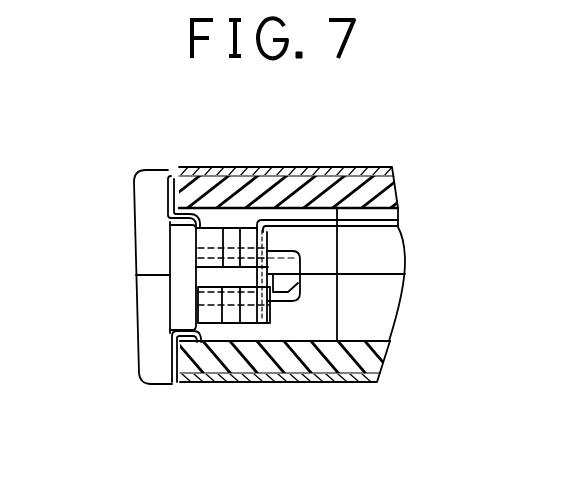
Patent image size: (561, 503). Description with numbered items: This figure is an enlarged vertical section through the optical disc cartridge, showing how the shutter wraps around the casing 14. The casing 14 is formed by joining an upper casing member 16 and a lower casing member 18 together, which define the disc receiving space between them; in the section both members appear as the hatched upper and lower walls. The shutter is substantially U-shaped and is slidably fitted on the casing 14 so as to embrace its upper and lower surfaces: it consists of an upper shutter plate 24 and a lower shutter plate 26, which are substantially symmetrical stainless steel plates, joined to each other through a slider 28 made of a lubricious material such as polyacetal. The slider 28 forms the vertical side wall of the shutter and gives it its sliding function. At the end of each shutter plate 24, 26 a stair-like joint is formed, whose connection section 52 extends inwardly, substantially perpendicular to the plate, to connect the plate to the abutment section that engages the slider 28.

The casing 14 is at (407, 168).
The upper casing member 16 is at (393, 194).
The lower casing member 18 is at (372, 357).
The upper shutter plate 24 is at (152, 209).
The lower shutter plate 26 is at (154, 352).
The slider 28 is at (175, 291).
The connection section 52 is at (170, 192).